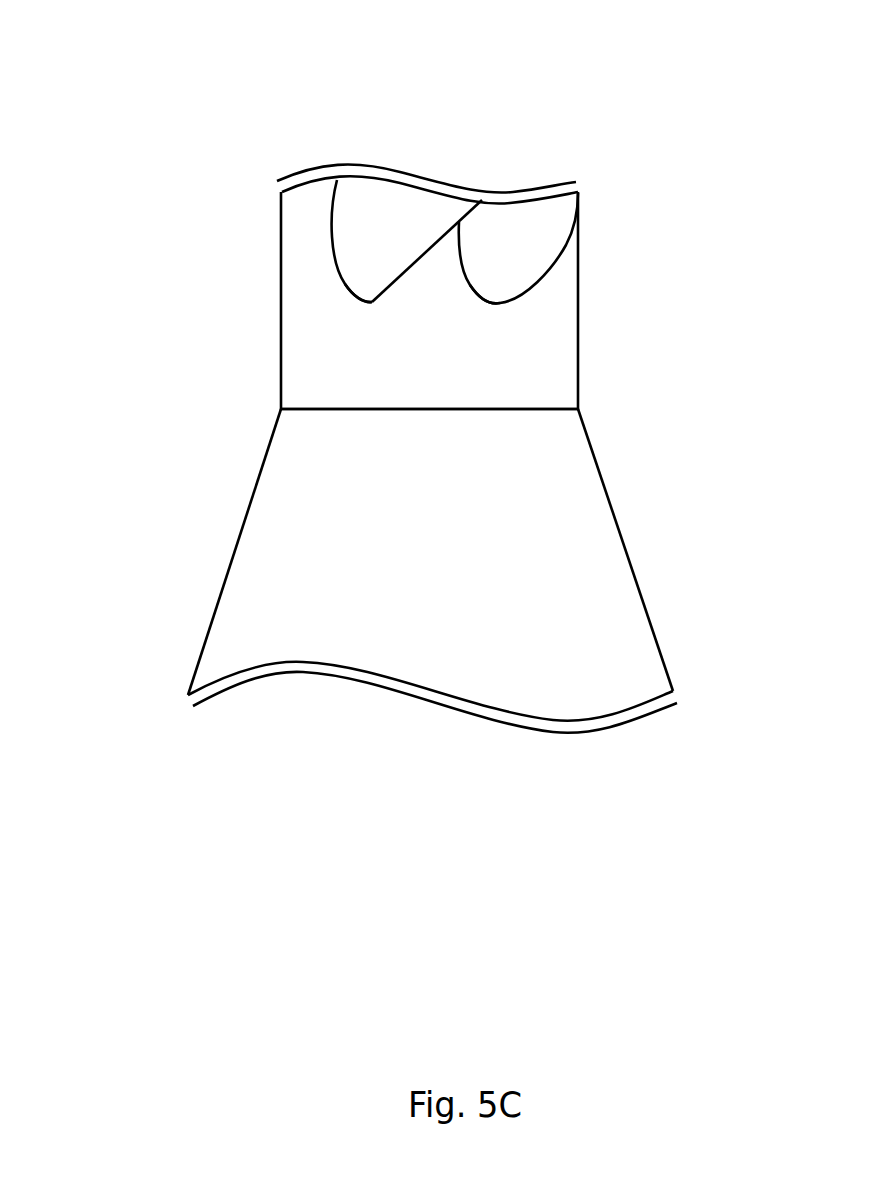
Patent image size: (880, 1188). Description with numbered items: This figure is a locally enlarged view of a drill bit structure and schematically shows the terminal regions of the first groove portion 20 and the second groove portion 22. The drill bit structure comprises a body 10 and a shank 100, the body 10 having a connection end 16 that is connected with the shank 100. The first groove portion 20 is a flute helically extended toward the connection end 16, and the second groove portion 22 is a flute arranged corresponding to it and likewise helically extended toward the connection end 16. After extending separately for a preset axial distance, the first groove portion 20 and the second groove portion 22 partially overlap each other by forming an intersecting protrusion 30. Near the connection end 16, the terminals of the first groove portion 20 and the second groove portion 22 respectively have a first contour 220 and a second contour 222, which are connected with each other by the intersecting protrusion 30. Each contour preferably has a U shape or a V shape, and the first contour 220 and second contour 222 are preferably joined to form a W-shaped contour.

The body 10 is at (273, 348).
The connection end 16 is at (408, 410).
The first groove portion 20 is at (518, 230).
The second groove portion 22 is at (383, 222).
The intersecting protrusion 30 is at (460, 230).
The first contour 220 is at (500, 303).
The second contour 222 is at (370, 302).
The shank 100 is at (442, 648).